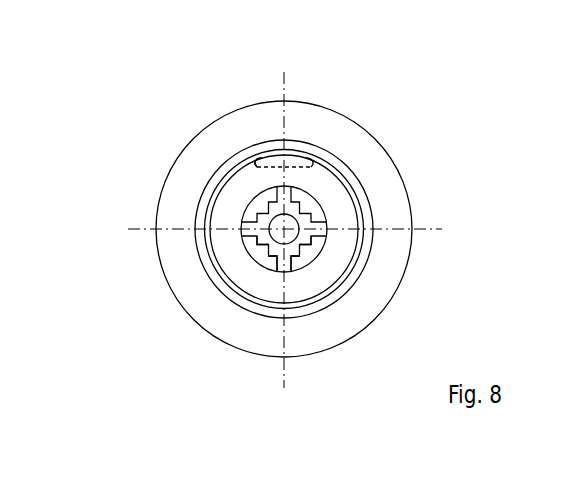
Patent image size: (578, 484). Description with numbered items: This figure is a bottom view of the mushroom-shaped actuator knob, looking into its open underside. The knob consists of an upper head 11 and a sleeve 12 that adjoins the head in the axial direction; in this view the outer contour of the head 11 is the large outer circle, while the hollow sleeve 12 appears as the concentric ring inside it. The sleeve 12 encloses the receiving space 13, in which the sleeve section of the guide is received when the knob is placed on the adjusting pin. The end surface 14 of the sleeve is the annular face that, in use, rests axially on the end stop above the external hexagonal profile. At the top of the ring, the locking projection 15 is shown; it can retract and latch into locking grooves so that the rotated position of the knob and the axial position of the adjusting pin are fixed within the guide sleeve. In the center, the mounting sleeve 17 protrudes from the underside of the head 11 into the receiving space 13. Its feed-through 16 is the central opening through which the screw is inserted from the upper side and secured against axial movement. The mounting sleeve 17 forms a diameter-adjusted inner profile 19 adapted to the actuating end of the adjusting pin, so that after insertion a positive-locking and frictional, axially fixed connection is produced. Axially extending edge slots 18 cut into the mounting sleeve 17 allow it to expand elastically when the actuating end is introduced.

The head 11 is at (357, 148).
The sleeve 12 is at (362, 197).
The receiving space 13 is at (327, 221).
The end surface 14 is at (297, 148).
The locking projection 15 is at (275, 160).
The feed-through 16 is at (277, 261).
The mounting sleeve 17 is at (306, 253).
The edge slots 18 is at (289, 261).
The inner profile 19 is at (258, 245).